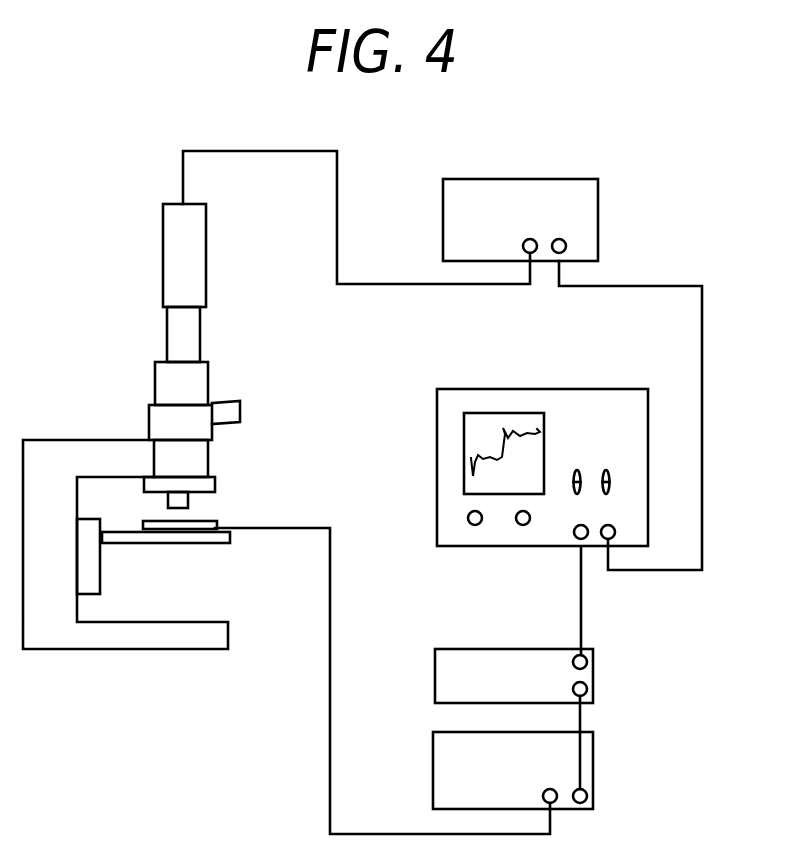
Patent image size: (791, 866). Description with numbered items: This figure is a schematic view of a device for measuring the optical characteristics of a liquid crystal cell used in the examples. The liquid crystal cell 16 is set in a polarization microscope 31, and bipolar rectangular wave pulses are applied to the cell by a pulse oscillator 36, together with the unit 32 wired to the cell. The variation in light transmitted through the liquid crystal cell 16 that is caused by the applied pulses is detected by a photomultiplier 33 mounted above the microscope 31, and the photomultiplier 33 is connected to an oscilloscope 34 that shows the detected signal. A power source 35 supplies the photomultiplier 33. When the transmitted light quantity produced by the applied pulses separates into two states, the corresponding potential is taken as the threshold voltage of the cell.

The liquid crystal cell 16 is at (208, 522).
The polarization microscope 31 is at (197, 460).
The power supply 32 is at (448, 770).
The photomultiplier 33 is at (193, 289).
The oscilloscope 34 is at (636, 463).
The power source 35 is at (588, 217).
The pulse oscillator 36 is at (490, 665).